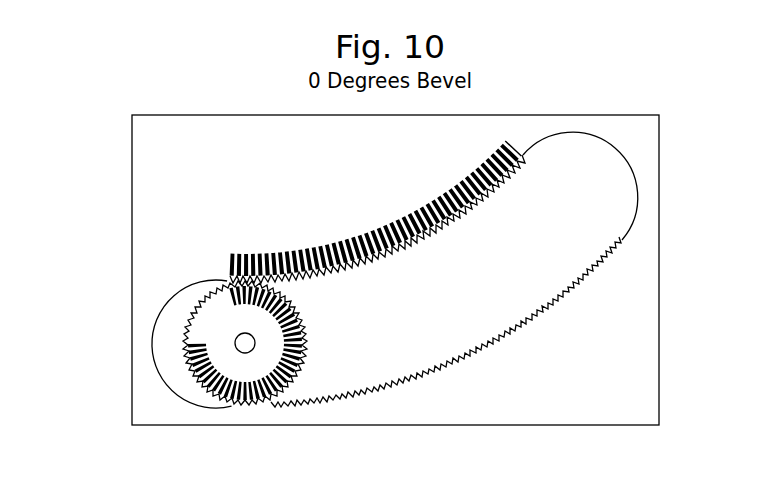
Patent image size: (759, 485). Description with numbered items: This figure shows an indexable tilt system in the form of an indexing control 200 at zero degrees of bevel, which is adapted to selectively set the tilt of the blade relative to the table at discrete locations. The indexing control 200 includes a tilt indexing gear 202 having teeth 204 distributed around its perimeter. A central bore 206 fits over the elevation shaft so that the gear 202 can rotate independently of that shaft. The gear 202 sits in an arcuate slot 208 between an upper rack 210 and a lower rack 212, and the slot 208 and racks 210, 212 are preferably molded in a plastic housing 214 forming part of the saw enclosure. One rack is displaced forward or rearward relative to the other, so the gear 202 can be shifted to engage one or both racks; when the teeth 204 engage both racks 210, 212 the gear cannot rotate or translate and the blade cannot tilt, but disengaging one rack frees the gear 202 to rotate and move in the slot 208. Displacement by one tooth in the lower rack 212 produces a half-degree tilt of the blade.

The indexing control 200 is at (147, 297).
The tilt indexing gear 202 is at (227, 362).
The teeth 204 is at (305, 332).
The central bore 206 is at (237, 333).
The arcuate slot 208 is at (524, 155).
The upper rack 210 is at (508, 188).
The lower rack 212 is at (514, 317).
The plastic housing 214 is at (627, 393).